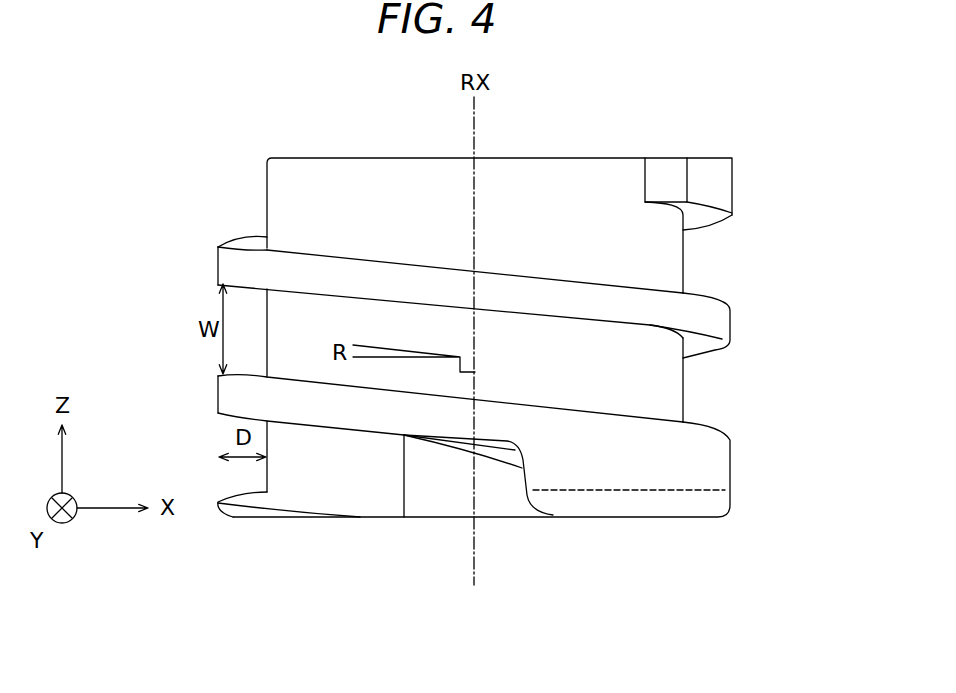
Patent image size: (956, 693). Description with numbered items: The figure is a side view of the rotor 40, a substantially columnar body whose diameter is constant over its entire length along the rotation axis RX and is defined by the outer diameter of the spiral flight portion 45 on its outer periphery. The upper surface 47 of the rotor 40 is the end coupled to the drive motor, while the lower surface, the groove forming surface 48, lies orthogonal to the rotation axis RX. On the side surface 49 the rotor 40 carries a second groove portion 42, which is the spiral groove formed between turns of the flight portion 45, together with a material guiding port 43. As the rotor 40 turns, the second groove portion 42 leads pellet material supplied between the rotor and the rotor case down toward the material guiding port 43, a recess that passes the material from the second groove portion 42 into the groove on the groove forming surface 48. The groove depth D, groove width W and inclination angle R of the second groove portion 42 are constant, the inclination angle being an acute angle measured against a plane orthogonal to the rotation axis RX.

The rotor 40 is at (725, 103).
The second groove portion 42 is at (663, 260).
The material guiding port 43 is at (441, 496).
The flight portion 45 is at (230, 260).
The upper surface 47 is at (611, 140).
The groove forming surface 48 is at (570, 548).
The side surface 49 is at (140, 225).